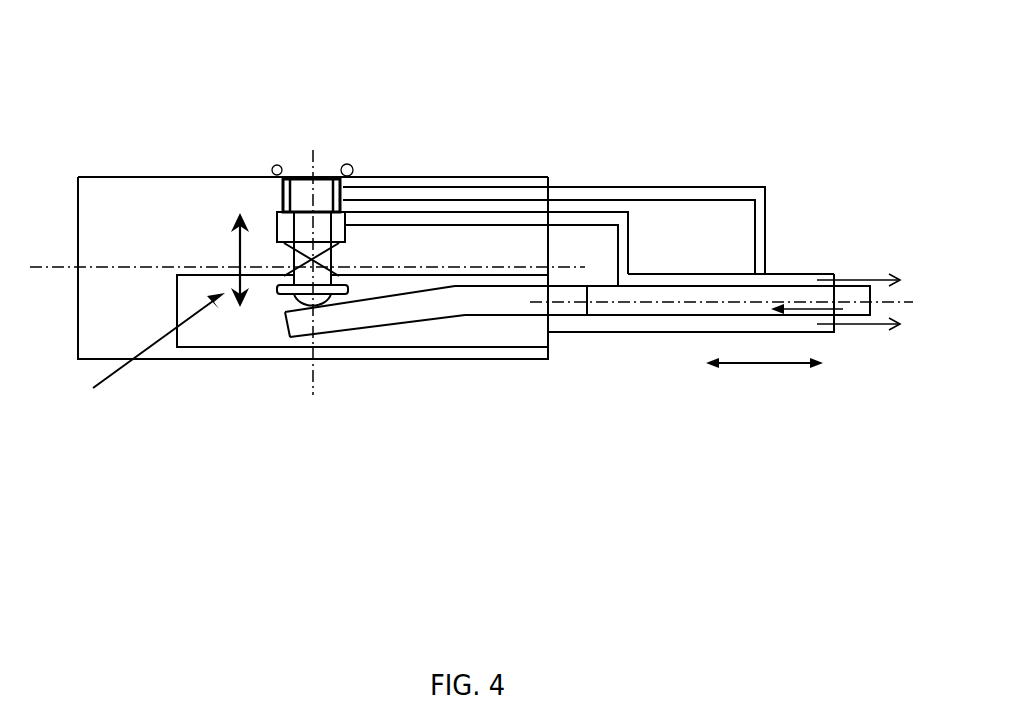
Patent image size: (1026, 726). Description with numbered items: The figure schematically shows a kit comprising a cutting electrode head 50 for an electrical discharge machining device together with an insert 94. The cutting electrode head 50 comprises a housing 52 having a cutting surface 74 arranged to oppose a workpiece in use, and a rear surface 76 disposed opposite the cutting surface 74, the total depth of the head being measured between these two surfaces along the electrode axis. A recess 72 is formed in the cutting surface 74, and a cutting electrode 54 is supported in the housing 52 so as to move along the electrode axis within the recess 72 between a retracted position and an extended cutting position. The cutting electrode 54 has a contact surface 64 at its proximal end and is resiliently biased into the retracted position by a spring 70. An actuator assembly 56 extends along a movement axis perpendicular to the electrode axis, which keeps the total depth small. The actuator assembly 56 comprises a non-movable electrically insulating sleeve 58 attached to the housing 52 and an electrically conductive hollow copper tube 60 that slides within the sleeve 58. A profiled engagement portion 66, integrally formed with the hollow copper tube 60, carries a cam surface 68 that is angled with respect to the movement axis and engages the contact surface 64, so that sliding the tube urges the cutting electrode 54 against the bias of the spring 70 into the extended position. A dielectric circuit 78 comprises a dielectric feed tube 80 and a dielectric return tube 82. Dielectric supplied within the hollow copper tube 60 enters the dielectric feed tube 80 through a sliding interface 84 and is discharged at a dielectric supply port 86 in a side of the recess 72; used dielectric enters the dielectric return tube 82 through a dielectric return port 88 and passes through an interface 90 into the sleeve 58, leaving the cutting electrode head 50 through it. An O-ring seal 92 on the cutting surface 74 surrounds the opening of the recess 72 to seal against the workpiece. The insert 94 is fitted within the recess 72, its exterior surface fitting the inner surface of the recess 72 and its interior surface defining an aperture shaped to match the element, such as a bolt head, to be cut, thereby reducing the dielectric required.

The cutting electrode head 50 is at (160, 58).
The housing 52 is at (78, 197).
The cutting electrode 54 is at (245, 190).
The actuator assembly 56 is at (668, 291).
The electrically insulating sleeve 58 is at (637, 333).
The hollow copper tube 60 is at (700, 322).
The contact surface 64 is at (293, 300).
The profiled engagement portion 66 is at (498, 345).
The cam surface 68 is at (380, 295).
The spring 70 is at (328, 293).
The recess 72 is at (348, 120).
The cutting surface 74 is at (135, 177).
The rear surface 76 is at (250, 358).
The dielectric circuit 78 is at (553, 180).
The dielectric feed tube 80 is at (488, 212).
The dielectric return tube 82 is at (555, 200).
The interface 84 is at (630, 250).
The dielectric supply port 86 is at (348, 212).
The dielectric return port 88 is at (352, 190).
The interface 90 is at (768, 262).
The O-ring seal 92 is at (303, 222).
The insert 94 is at (278, 165).